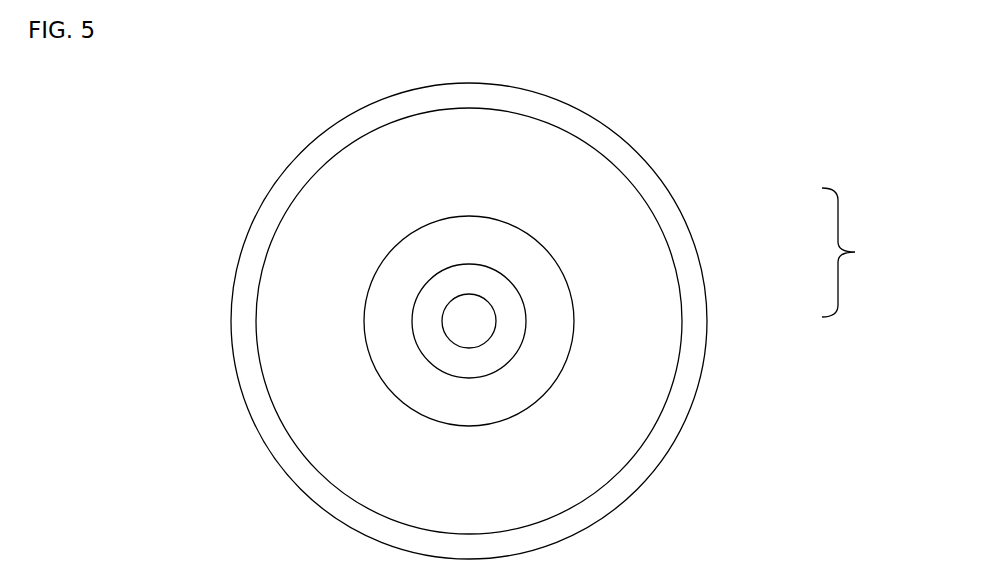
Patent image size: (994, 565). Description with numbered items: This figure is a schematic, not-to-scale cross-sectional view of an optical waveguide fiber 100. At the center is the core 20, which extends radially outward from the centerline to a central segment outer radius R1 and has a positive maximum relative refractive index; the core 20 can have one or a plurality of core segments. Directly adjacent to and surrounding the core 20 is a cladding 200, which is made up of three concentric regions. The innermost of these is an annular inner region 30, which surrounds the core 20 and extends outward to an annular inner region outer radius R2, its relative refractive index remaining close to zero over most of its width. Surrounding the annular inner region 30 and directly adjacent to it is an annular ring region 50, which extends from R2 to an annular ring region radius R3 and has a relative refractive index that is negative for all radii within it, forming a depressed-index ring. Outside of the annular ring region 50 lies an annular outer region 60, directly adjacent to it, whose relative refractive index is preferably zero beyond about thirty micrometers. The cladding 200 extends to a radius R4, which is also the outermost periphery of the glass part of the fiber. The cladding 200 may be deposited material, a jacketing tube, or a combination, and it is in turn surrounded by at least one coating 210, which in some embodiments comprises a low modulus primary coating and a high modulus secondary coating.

The optical waveguide fiber 100 is at (195, 205).
The core 20 is at (483, 328).
The annular inner region 30 is at (507, 324).
The annular ring region 50 is at (525, 288).
The annular outer region 60 is at (598, 252).
The cladding 200 is at (863, 252).
The coating 210 is at (257, 406).
The central segment outer radius R1 is at (469, 321).
The annular inner region outer radius R2 is at (469, 321).
The annular ring region radius R3 is at (469, 321).
The cladding outer radius R4 is at (469, 321).